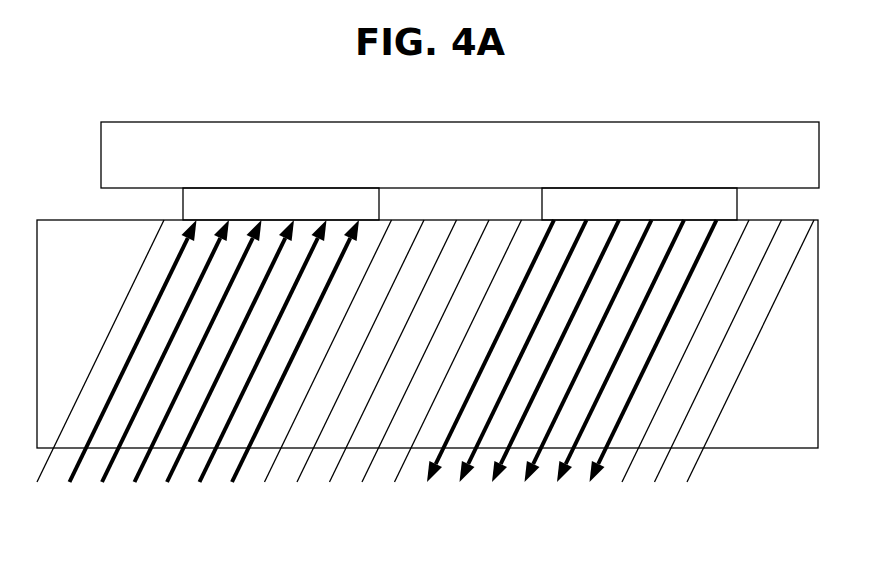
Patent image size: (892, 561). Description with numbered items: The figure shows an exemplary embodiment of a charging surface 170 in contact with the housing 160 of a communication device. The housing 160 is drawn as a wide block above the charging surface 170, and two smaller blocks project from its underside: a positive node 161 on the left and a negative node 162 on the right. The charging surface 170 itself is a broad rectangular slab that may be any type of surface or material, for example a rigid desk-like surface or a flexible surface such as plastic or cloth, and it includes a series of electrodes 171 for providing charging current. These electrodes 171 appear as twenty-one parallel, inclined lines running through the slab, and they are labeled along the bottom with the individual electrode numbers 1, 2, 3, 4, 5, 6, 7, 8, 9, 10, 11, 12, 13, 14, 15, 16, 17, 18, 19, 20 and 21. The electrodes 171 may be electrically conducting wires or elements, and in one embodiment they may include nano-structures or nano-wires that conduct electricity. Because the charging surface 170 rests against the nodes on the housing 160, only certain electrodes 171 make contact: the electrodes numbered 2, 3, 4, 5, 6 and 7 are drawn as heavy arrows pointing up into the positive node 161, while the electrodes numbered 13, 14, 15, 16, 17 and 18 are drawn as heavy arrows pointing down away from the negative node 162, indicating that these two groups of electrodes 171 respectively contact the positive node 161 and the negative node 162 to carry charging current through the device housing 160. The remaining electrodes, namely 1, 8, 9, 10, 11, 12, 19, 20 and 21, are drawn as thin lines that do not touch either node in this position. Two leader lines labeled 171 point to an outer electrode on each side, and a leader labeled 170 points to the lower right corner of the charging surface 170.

The housing 160 is at (460, 155).
The positive node 161 is at (281, 204).
The negative node 162 is at (639, 204).
The charging surface 170 is at (428, 378).
The electrodes 171 is at (420, 365).
The electrode 1 is at (95, 365).
The electrode 2 is at (128, 365).
The electrode 3 is at (160, 365).
The electrode 4 is at (193, 365).
The electrode 5 is at (225, 365).
The electrode 6 is at (258, 365).
The electrode 7 is at (290, 365).
The electrode 8 is at (323, 365).
The electrode 9 is at (355, 365).
The electrode 10 is at (384, 365).
The electrode 11 is at (417, 365).
The electrode 12 is at (449, 365).
The electrode 13 is at (482, 365).
The electrode 14 is at (514, 365).
The electrode 15 is at (547, 365).
The electrode 16 is at (579, 365).
The electrode 17 is at (612, 365).
The electrode 18 is at (644, 365).
The electrode 19 is at (677, 365).
The electrode 20 is at (709, 365).
The electrode 21 is at (742, 365).